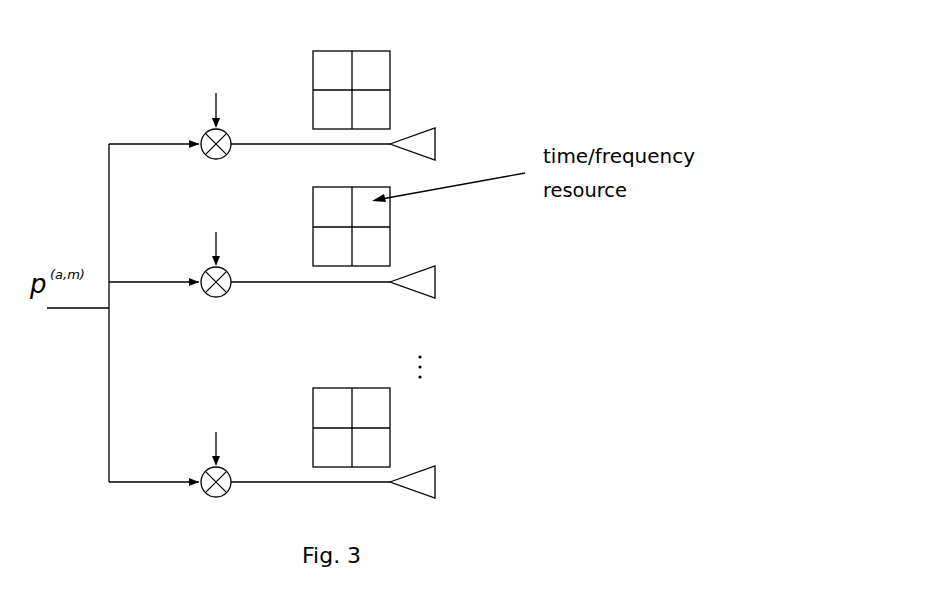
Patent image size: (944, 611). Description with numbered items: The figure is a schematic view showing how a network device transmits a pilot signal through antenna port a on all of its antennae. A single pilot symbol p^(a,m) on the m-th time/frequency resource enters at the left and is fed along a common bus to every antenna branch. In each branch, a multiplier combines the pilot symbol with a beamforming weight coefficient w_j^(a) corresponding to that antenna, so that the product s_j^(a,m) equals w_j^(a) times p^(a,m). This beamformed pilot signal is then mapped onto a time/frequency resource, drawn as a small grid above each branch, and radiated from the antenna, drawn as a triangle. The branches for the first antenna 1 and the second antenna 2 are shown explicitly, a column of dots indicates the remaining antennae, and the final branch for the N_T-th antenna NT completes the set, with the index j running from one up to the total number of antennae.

The first antenna 1 is at (289, 105).
The second antenna 2 is at (289, 242).
The N_T-th antenna NT is at (297, 443).